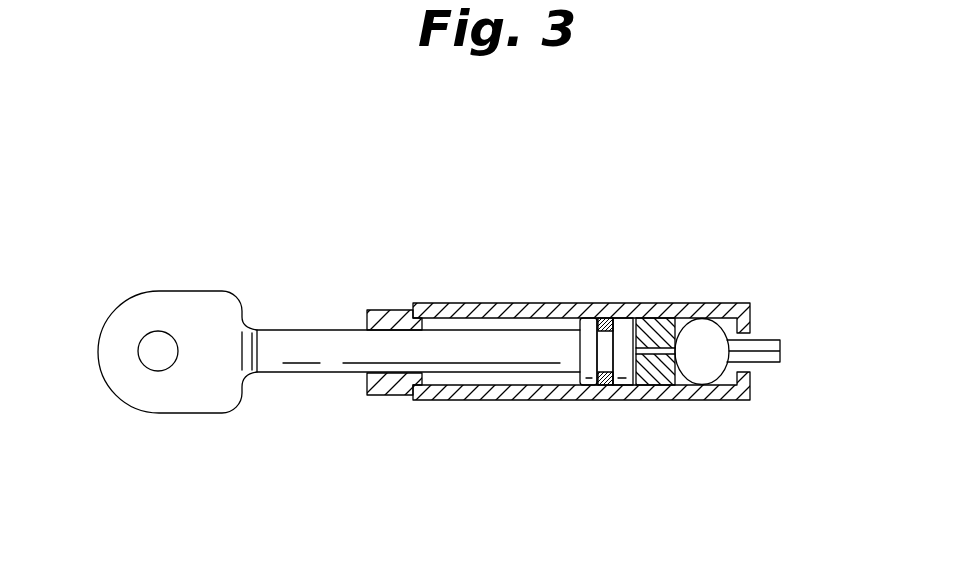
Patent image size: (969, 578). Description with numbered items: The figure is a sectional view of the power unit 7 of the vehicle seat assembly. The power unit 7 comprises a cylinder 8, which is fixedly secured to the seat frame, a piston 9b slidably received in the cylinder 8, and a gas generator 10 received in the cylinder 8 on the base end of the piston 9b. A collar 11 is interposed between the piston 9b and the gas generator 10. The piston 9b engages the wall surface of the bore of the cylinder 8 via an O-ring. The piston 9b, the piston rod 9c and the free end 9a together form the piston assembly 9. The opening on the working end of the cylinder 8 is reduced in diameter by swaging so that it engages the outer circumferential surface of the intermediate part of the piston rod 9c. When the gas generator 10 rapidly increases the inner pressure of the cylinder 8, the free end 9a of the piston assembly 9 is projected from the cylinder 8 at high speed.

The power unit 7 is at (390, 420).
The cylinder 8 is at (547, 394).
The piston assembly 9 is at (550, 212).
The free end 9a is at (192, 300).
The piston 9b is at (585, 338).
The piston rod 9c is at (328, 335).
The gas generator 10 is at (712, 330).
The collar 11 is at (652, 322).